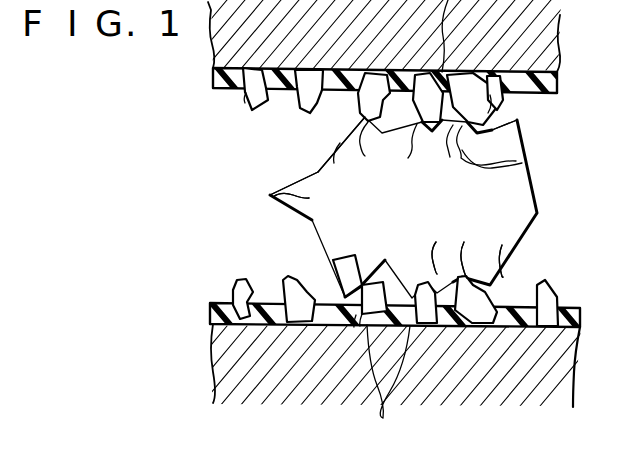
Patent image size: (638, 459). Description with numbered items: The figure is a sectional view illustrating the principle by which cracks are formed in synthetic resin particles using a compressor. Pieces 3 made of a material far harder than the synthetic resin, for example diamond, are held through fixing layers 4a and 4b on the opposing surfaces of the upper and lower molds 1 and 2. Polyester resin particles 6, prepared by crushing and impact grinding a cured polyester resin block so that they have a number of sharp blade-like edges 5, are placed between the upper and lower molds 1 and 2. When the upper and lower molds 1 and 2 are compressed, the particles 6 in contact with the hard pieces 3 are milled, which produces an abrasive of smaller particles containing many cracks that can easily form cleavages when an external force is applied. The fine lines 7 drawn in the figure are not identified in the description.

The upper mold 1 is at (558, 43).
The lower mold 2 is at (228, 373).
The pieces 3 is at (246, 93).
The fixing layer 4a is at (556, 80).
The fixing layer 4b is at (210, 317).
The edges 5 is at (350, 120).
The polyester resin particles 6 is at (536, 200).
The cracks 7 is at (292, 205).